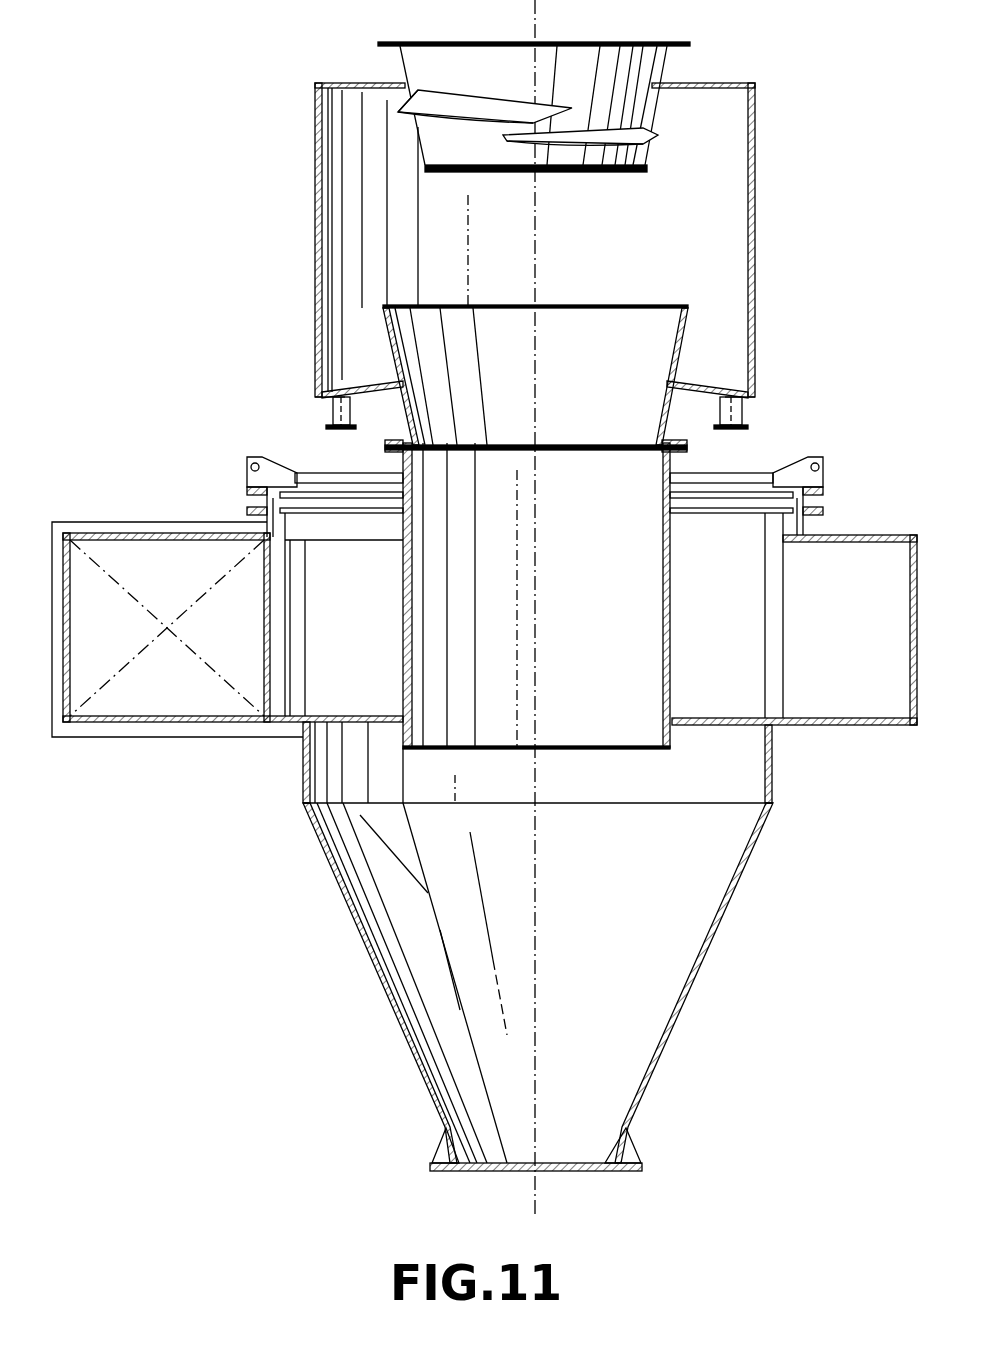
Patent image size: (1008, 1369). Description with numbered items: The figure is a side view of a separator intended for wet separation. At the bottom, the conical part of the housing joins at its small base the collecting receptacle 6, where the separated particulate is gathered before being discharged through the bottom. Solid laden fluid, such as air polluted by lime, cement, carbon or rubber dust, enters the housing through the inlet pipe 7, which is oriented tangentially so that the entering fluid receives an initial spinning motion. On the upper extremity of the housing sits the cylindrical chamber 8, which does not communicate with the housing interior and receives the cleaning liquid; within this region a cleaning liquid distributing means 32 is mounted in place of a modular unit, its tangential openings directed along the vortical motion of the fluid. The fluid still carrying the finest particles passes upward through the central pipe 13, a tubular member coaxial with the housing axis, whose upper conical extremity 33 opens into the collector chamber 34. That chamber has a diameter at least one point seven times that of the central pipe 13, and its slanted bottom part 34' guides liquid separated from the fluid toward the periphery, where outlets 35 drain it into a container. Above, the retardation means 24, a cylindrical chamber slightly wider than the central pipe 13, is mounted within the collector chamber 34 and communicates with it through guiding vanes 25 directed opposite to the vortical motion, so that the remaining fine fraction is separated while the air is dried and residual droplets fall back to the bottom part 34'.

The collecting receptacle 6 is at (383, 968).
The inlet pipe 7 is at (147, 697).
The cylindrical chamber 8 is at (753, 473).
The central pipe 13 is at (618, 708).
The retardation means 24 is at (447, 130).
The guiding vanes 25 is at (473, 108).
The cleaning liquid distributing means 32 is at (348, 500).
The upper conical extremity 33 is at (630, 342).
The collector chamber 34 is at (572, 240).
The bottom part 34' is at (535, 366).
The outlets 35 is at (328, 407).